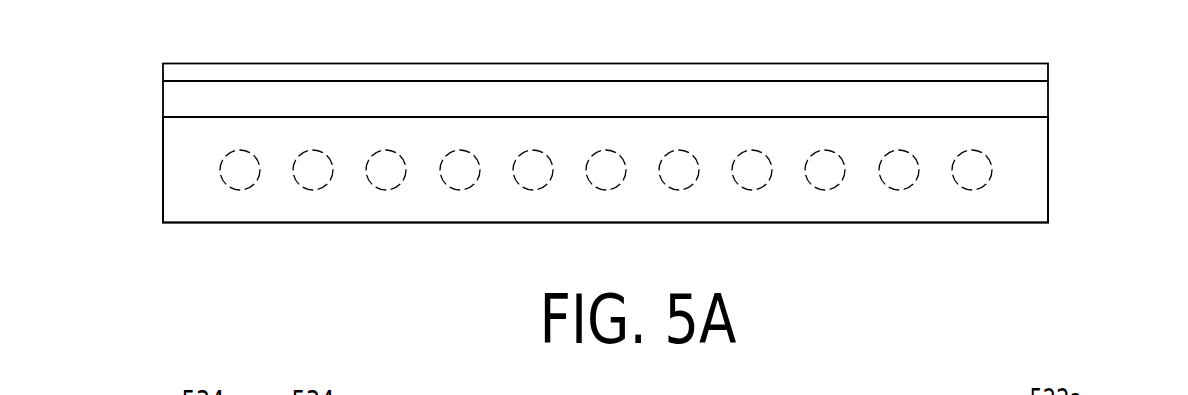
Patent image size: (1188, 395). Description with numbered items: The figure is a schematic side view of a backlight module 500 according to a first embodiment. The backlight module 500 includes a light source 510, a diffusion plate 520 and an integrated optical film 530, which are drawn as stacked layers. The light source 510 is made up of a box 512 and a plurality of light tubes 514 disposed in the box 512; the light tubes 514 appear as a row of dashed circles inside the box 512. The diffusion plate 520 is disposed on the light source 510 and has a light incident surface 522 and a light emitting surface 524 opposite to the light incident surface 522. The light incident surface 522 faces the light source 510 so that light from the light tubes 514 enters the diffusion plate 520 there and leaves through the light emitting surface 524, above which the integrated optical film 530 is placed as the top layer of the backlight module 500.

The backlight module 500 is at (1112, 285).
The light source 510 is at (675, 170).
The box 512 is at (1030, 192).
The light tubes 514 is at (977, 167).
The diffusion plate 520 is at (168, 106).
The light incident surface 522 is at (215, 118).
The light emitting surface 524 is at (371, 80).
The integrated optical film 530 is at (168, 73).